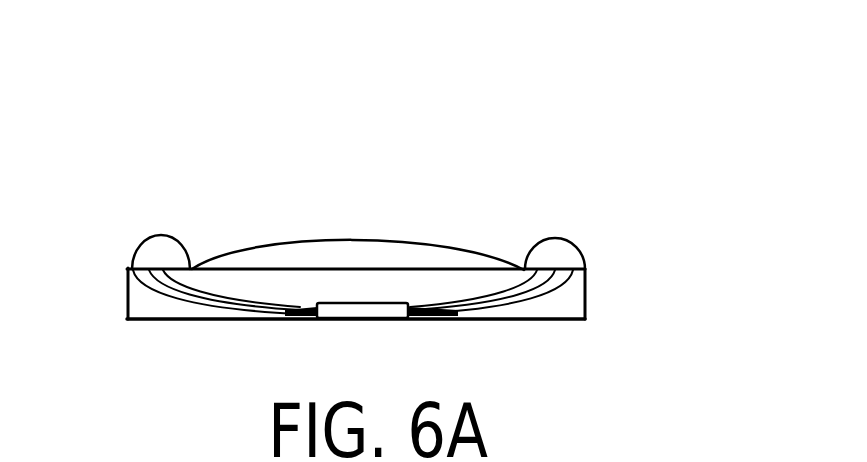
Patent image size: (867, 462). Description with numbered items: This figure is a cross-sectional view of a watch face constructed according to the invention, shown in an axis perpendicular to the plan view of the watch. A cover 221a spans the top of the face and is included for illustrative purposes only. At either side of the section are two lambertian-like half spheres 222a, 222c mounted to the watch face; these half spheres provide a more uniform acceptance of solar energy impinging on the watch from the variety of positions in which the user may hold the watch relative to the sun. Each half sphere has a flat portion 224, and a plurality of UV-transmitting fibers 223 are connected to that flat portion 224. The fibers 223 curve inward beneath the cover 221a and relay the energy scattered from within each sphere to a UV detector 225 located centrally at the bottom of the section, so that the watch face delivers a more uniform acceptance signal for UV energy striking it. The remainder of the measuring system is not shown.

The cover 221a is at (390, 240).
The lambertian-like half sphere 222a is at (143, 243).
The lambertian-like half sphere 222c is at (565, 255).
The UV-transmitting fibers 223 is at (190, 308).
The flat portion 224 is at (128, 288).
The UV detector 225 is at (372, 312).